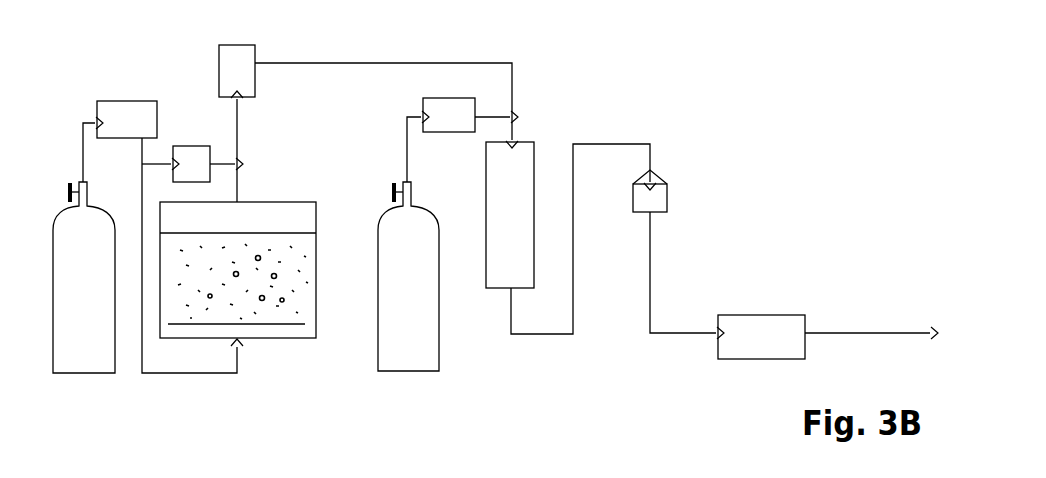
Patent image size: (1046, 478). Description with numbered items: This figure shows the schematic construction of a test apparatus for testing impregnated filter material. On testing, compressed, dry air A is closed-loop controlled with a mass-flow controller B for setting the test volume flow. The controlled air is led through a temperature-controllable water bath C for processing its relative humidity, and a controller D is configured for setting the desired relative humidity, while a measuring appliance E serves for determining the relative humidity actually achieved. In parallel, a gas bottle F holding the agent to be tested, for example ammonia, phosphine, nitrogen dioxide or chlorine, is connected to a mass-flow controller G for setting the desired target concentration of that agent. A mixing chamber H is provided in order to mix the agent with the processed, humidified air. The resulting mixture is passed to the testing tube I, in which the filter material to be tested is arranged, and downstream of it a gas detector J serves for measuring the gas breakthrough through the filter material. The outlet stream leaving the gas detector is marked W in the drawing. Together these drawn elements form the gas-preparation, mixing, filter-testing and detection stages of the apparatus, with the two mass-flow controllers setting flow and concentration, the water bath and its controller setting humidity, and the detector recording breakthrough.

The compressed, dry air A is at (84, 277).
The mass-flow controller B is at (127, 119).
The temperature-controllable water bath C is at (238, 270).
The controller D is at (191, 164).
The measuring appliance E is at (237, 71).
The gas bottle F is at (408, 276).
The mass-flow controller G is at (449, 115).
The mixing chamber H is at (510, 215).
The testing tube I is at (650, 191).
The gas detector J is at (761, 337).
The waste/outlet stream W is at (951, 334).